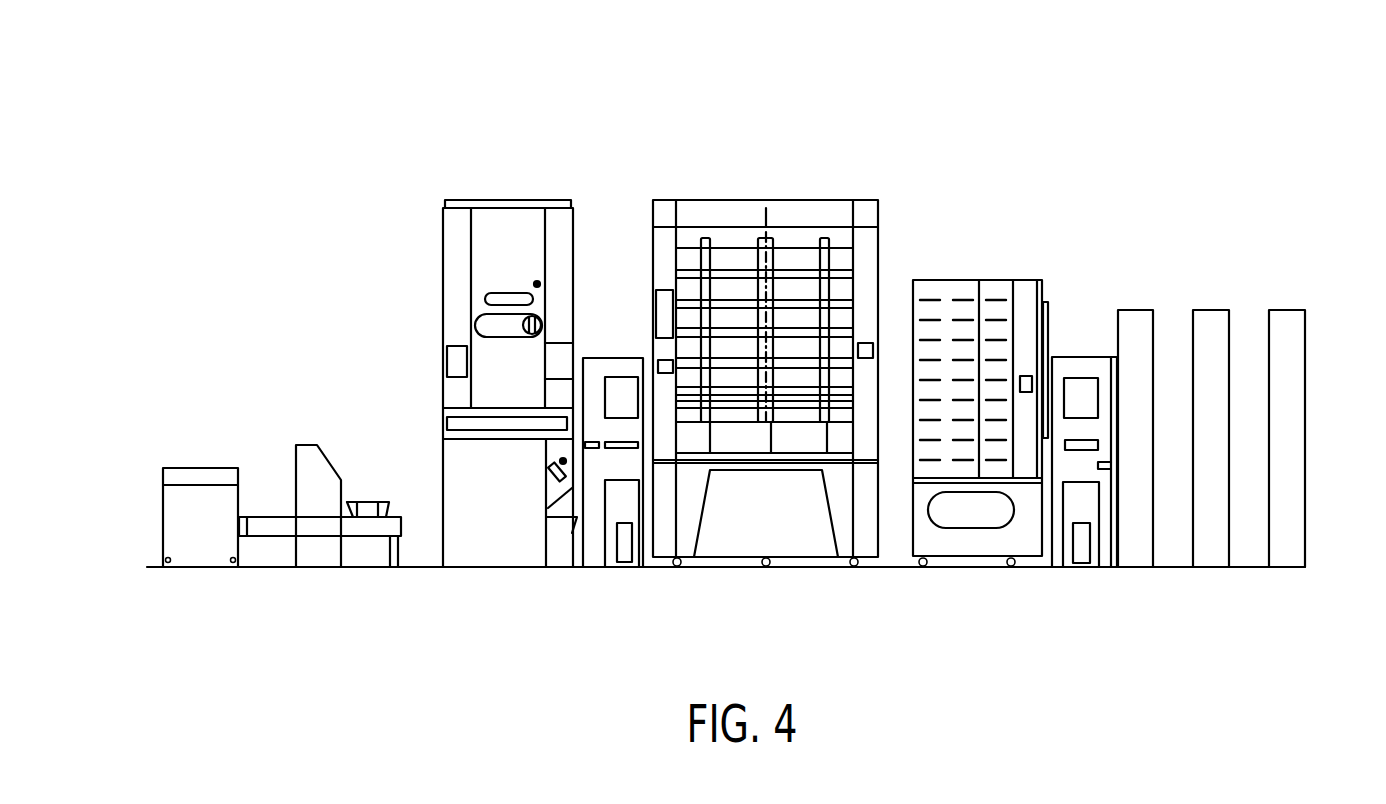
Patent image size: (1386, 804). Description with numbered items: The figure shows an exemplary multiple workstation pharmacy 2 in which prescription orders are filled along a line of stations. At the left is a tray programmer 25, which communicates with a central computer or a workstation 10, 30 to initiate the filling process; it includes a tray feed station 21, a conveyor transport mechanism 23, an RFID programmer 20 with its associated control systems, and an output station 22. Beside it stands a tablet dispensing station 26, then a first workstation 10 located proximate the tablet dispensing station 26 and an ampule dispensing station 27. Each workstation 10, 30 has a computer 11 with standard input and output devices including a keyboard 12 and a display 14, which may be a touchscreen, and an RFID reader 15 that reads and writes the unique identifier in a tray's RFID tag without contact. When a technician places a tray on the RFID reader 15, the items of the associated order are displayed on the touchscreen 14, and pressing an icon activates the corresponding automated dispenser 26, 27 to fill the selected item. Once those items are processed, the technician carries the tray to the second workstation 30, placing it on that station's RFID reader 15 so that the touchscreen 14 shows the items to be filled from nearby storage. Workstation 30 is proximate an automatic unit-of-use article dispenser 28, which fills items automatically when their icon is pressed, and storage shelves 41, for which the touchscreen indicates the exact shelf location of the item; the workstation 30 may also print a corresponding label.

The multiple workstation pharmacy 2 is at (241, 111).
The workstation 10 is at (610, 497).
The computer 11 is at (627, 557).
The keyboard 12 is at (1083, 452).
The display 14 is at (622, 378).
The RFID reader 15 is at (590, 440).
The RFID programmer 20 is at (338, 541).
The tray feed station 21 is at (196, 557).
The output station 22 is at (401, 527).
The conveyor transport mechanism 23 is at (268, 537).
The tray programmer 25 is at (300, 493).
The tablet dispensing station 26 is at (442, 222).
The ampule dispensing station 27 is at (803, 560).
The automatic unit-of-use article dispenser 28 is at (993, 280).
The workstation 30 is at (1064, 497).
The storage shelves 41 is at (1287, 310).